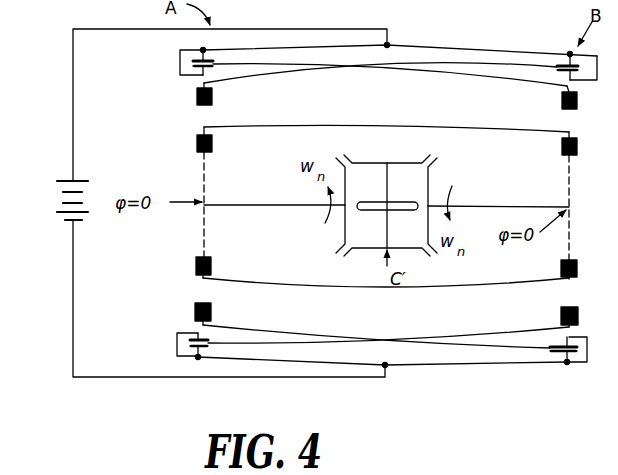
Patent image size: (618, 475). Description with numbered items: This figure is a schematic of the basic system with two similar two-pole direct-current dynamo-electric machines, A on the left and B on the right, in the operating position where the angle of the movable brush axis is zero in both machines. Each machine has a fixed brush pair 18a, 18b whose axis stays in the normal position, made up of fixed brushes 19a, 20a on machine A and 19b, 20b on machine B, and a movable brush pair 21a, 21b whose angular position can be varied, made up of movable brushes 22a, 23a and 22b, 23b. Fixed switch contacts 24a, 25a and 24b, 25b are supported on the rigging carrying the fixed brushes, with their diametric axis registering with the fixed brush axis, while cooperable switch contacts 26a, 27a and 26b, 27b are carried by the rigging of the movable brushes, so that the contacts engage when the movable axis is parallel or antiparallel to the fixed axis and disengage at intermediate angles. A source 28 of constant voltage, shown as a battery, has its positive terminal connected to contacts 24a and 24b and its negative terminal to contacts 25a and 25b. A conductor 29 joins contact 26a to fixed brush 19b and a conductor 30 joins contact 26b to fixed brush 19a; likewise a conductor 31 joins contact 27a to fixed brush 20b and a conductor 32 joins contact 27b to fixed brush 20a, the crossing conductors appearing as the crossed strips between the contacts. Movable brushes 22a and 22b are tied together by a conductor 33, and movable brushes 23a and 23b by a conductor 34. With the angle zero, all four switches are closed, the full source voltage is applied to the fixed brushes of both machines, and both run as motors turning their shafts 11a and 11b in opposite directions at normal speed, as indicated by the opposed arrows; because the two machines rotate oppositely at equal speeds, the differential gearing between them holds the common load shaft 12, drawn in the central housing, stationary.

The rotatable shaft 11a is at (238, 203).
The rotatable shaft 11b is at (498, 200).
The common load shaft 12 is at (363, 203).
The fixed brush pair 18a is at (214, 97).
The fixed brush pair 18b is at (558, 104).
The fixed brush 19a is at (197, 98).
The fixed brush 19b is at (558, 112).
The fixed brush 20a is at (194, 312).
The fixed brush 20b is at (561, 314).
The movable brush pair 21a is at (214, 145).
The movable brush pair 21b is at (560, 150).
The movable brush 22a is at (197, 146).
The movable brush 22b is at (542, 167).
The movable brush 23a is at (196, 266).
The movable brush 23b is at (560, 268).
The fixed switch contact 24a is at (179, 76).
The fixed switch contact 24b is at (563, 75).
The fixed switch contact 25a is at (195, 351).
The fixed switch contact 25b is at (567, 366).
The cooperable switch contact 26a is at (216, 62).
The cooperable switch contact 26b is at (561, 62).
The cooperable switch contact 27a is at (215, 348).
The cooperable switch contact 27b is at (551, 352).
The source of constant voltage 28 is at (88, 205).
The conductor 29 is at (468, 78).
The conductor 30 is at (295, 72).
The conductor 31 is at (480, 338).
The conductor 32 is at (262, 330).
The conductor 33 is at (372, 124).
The conductor 34 is at (368, 288).